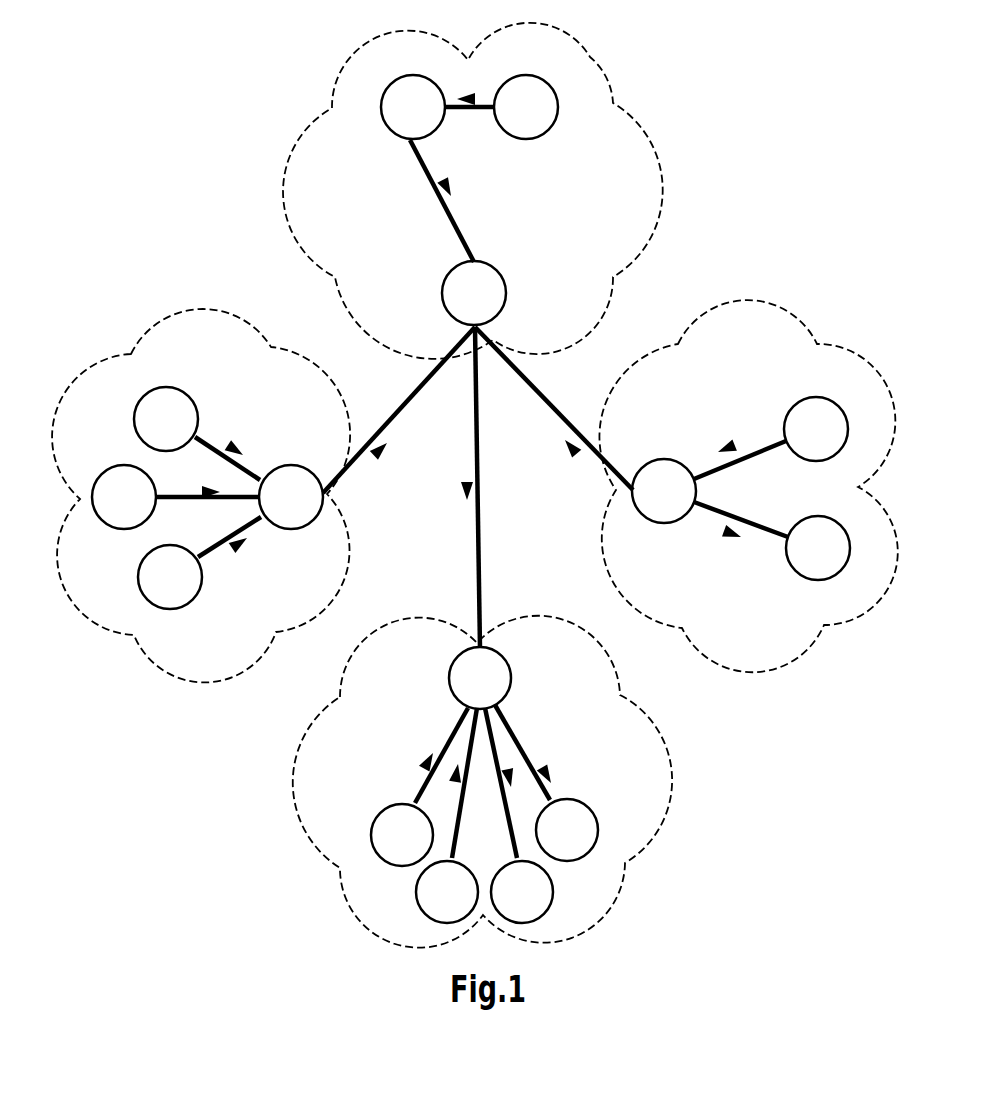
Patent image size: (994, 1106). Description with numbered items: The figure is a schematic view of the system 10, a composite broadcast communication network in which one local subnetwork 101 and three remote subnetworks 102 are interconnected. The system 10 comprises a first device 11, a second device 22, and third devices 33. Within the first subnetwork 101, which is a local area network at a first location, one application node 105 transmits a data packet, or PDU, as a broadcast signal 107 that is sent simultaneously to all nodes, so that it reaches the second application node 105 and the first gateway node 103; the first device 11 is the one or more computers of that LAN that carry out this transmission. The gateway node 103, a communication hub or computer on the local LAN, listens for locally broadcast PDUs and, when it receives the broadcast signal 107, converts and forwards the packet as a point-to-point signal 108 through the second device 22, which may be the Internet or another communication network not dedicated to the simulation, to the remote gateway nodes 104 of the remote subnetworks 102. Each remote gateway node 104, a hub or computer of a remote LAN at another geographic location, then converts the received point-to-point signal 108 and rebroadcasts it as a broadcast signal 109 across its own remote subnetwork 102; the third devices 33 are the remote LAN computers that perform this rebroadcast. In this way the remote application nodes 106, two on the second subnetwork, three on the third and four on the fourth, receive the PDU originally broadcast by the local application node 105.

The system 10 is at (801, 71).
The first subnetwork 101 is at (590, 57).
The remote subnetwork 102 is at (172, 309).
The first gateway node 103 is at (507, 284).
The remote gateway node 104 is at (281, 465).
The application node 105 is at (469, 107).
The remote application node 106 is at (471, 655).
The first device 11 is at (465, 108).
The broadcast signal 107 is at (458, 97).
The second device 22 is at (472, 390).
The point-to-point signal 108 is at (465, 486).
The third device 33 is at (201, 438).
The broadcast signal 109 is at (236, 446).